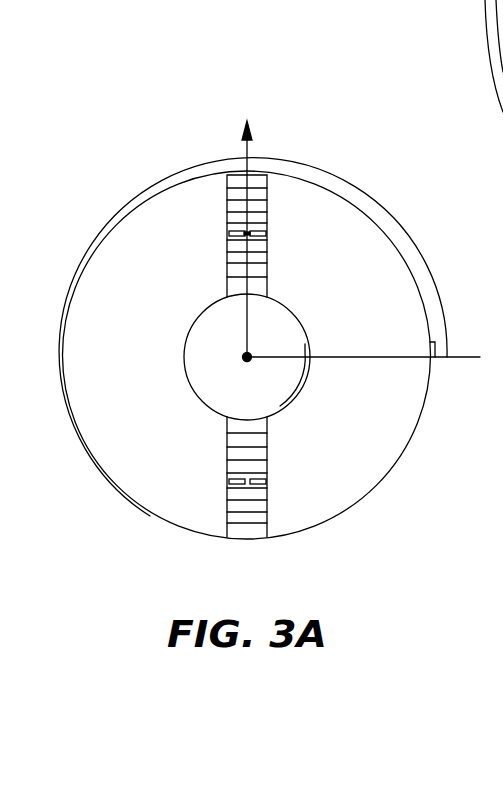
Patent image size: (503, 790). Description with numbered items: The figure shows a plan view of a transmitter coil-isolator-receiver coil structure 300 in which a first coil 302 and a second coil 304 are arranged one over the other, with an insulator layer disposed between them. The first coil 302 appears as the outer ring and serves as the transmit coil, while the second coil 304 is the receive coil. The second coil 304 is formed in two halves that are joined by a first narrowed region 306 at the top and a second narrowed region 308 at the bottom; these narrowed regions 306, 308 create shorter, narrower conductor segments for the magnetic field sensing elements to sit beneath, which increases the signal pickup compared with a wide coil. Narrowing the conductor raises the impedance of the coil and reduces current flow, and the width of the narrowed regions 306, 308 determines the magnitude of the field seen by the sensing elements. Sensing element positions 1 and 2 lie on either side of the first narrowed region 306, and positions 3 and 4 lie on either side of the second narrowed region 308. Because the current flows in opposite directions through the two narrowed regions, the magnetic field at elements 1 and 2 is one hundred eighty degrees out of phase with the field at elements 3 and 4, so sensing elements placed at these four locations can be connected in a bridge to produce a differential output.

The structure 300 is at (269, 337).
The first coil 302 is at (155, 185).
The second coil 304 is at (343, 508).
The first narrowed region 306 is at (290, 193).
The second narrowed region 308 is at (247, 524).
The element 1 is at (228, 234).
The element 2 is at (267, 234).
The element 3 is at (227, 483).
The element 4 is at (267, 483).